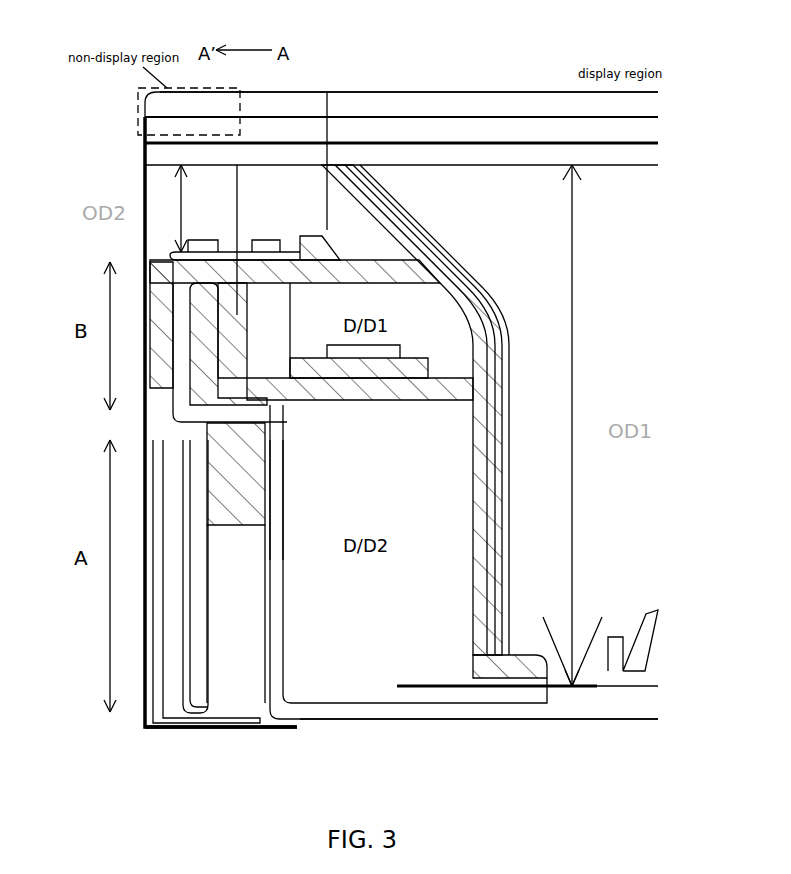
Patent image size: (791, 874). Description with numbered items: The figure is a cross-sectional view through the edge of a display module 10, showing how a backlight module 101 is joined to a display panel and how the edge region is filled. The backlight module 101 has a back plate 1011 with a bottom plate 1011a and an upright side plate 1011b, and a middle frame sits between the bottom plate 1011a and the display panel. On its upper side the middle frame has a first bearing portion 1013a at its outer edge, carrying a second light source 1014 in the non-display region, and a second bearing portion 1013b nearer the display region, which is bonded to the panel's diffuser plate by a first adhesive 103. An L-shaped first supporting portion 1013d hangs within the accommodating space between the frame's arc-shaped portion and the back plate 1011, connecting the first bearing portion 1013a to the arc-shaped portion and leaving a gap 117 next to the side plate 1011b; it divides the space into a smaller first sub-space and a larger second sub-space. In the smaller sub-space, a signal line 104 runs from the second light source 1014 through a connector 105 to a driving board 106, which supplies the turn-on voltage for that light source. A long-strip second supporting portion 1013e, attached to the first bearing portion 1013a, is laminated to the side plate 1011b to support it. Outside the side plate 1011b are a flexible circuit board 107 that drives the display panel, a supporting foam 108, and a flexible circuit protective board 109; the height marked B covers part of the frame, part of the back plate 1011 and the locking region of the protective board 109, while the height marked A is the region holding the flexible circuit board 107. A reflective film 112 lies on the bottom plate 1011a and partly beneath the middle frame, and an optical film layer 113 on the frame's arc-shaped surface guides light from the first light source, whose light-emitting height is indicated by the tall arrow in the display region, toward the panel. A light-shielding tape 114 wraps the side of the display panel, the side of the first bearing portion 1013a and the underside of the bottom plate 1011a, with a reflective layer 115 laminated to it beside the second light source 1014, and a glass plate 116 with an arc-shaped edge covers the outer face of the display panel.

The display module 10 is at (403, 779).
The backlight module 101 is at (485, 333).
The first adhesive 103 is at (334, 167).
The signal line 104 is at (297, 320).
The connector 105 is at (383, 350).
The driving board 106 is at (423, 372).
The flexible circuit board 107 is at (204, 650).
The supporting foam 108 is at (232, 512).
The flexible circuit protective board 109 is at (178, 724).
The back plate 1011 is at (277, 652).
The bottom plate 1011a is at (350, 718).
The side plate 1011b is at (283, 495).
The first bearing portion 1013a is at (310, 243).
The second bearing portion 1013b is at (401, 93).
The first supporting portion 1013d is at (218, 240).
The second supporting portion 1013e is at (160, 322).
The second light source 1014 is at (176, 250).
The reflective film 112 is at (540, 688).
The optical film layer 113 is at (474, 300).
The light-shielding tape 114 is at (146, 163).
The reflective layer 115 is at (150, 192).
The glass plate 116 is at (572, 110).
The gap 117 is at (200, 362).